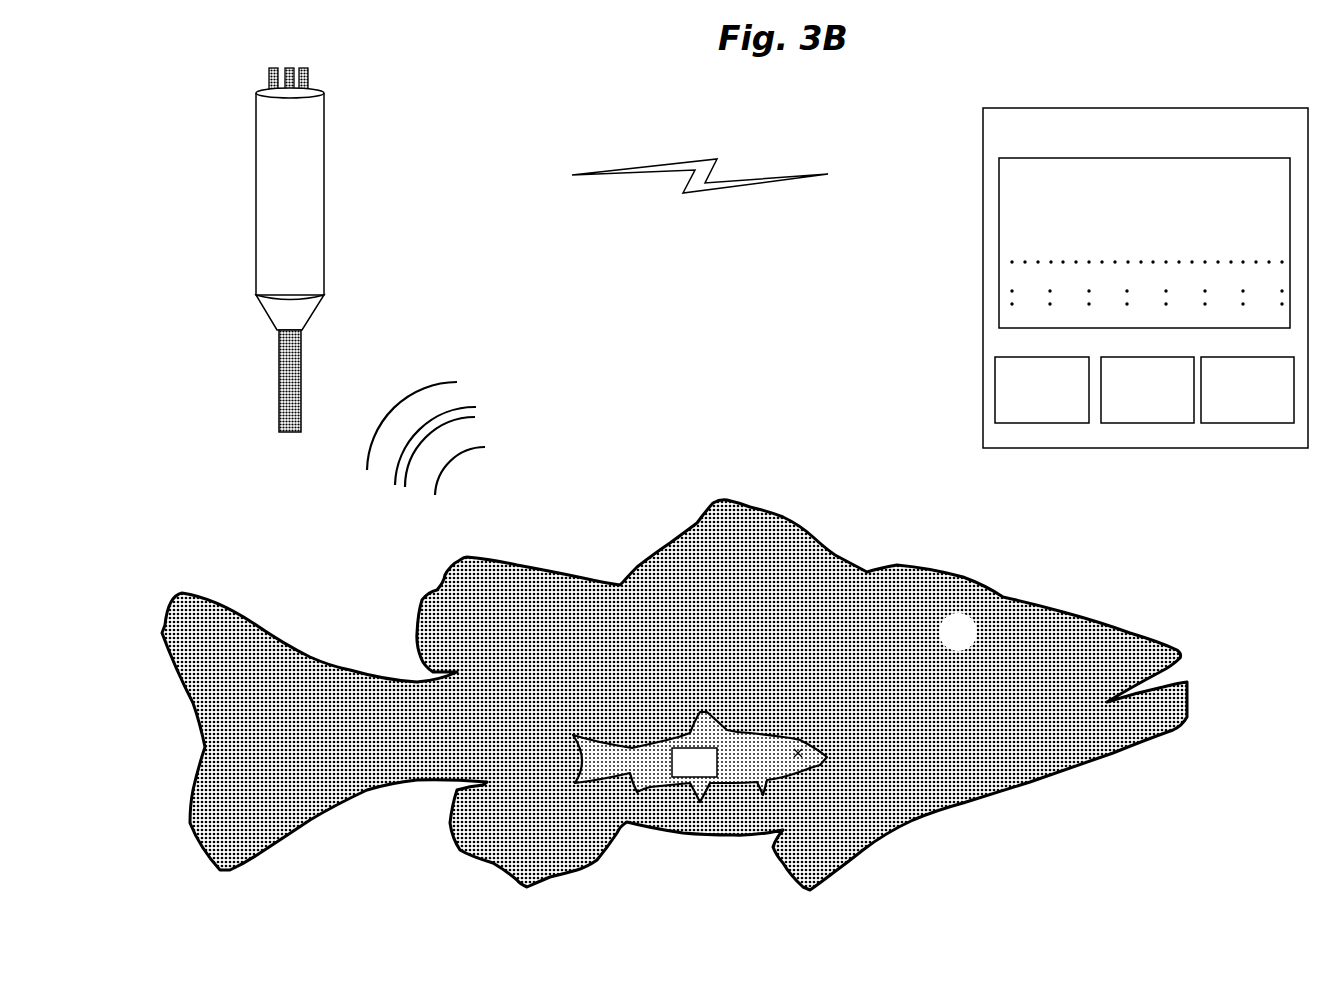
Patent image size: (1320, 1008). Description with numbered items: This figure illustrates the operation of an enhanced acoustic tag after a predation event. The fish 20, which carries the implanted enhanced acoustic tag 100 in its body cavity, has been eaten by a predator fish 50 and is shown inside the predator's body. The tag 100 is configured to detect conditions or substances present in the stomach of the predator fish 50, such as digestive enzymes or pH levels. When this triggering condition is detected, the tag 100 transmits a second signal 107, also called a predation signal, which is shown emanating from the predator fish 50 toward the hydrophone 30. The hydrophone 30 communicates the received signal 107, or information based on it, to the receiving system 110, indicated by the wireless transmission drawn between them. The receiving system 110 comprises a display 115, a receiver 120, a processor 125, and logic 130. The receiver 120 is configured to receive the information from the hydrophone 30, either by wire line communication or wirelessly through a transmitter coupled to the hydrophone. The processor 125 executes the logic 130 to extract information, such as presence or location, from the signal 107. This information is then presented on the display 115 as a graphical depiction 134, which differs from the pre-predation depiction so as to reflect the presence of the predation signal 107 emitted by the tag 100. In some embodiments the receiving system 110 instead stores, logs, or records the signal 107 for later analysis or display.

The hydrophone 30 is at (325, 168).
The second signal 107 is at (483, 402).
The receiving system 110 is at (1145, 278).
The display 115 is at (1144, 243).
The graphical depiction 134 is at (1205, 255).
The receiver 120 is at (1042, 390).
The processor 125 is at (1147, 390).
The logic 130 is at (1247, 390).
The predator fish 50 is at (674, 695).
The fish 20 is at (700, 757).
The enhanced acoustic tag 100 is at (694, 762).